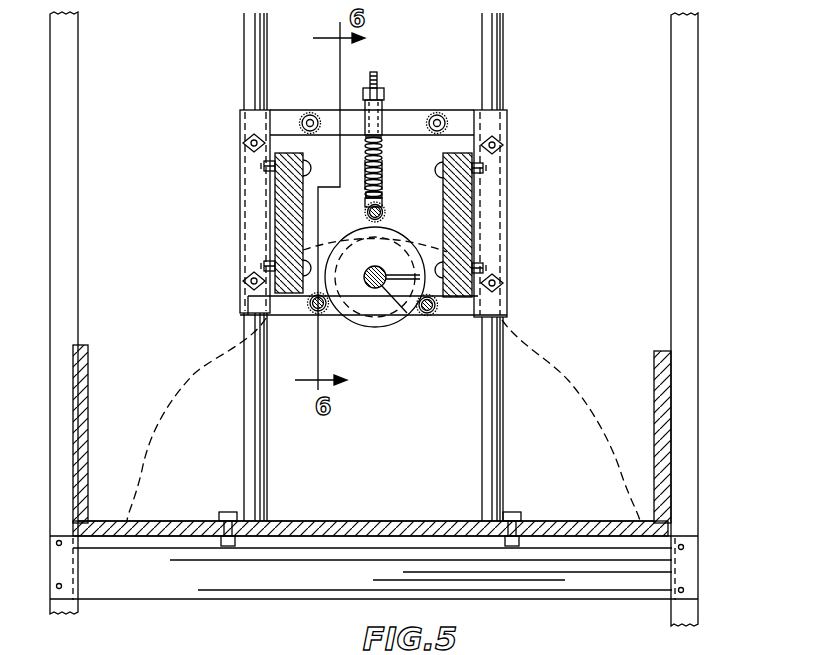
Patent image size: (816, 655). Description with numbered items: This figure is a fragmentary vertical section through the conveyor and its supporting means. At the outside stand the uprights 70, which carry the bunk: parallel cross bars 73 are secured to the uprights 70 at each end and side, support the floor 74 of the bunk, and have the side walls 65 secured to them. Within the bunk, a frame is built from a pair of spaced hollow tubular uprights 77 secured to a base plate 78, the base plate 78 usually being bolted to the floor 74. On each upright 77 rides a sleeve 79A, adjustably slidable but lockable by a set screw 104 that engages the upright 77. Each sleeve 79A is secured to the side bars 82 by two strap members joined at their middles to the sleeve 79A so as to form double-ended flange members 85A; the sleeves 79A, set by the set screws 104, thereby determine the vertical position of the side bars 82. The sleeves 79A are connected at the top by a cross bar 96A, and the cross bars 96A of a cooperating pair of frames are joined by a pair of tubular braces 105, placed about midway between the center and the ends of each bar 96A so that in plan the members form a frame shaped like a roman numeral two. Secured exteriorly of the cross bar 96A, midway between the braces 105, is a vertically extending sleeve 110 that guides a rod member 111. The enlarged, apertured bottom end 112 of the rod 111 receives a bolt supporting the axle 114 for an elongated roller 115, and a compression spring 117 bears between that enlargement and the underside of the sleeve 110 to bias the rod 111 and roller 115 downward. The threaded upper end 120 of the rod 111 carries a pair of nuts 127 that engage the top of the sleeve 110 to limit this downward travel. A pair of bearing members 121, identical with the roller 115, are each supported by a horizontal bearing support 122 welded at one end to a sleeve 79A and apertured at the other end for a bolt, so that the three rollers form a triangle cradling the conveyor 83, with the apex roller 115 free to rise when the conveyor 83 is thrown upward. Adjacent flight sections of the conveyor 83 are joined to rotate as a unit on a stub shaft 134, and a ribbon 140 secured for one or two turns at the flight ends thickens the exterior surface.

The uprights 70 is at (71, 67).
The side walls 65 is at (82, 419).
The floor 74 is at (569, 527).
The cross bars 73 is at (619, 593).
The uprights 77 is at (262, 463).
The base plate 78 is at (398, 520).
The sleeves 79A is at (242, 197).
The cross bar 96A is at (421, 113).
The tubular braces 105 is at (310, 112).
The horizontal bearing support 122 is at (294, 300).
The set screw 104 is at (246, 143).
The side bars 82 is at (283, 216).
The double-ended flange members 85A is at (264, 168).
The upper end of rod 120 is at (377, 74).
The nuts 127 is at (383, 90).
The sleeve 110 is at (383, 107).
The rod member 111 is at (383, 152).
The compression spring 117 is at (383, 166).
The bottom end of rod 112 is at (384, 196).
The axle 114 is at (366, 211).
The elongated roller 115 is at (386, 216).
The conveyor 83 is at (375, 338).
The stub shaft 134 is at (367, 267).
The ribbon 140 is at (386, 318).
The bearing members 121 is at (322, 314).